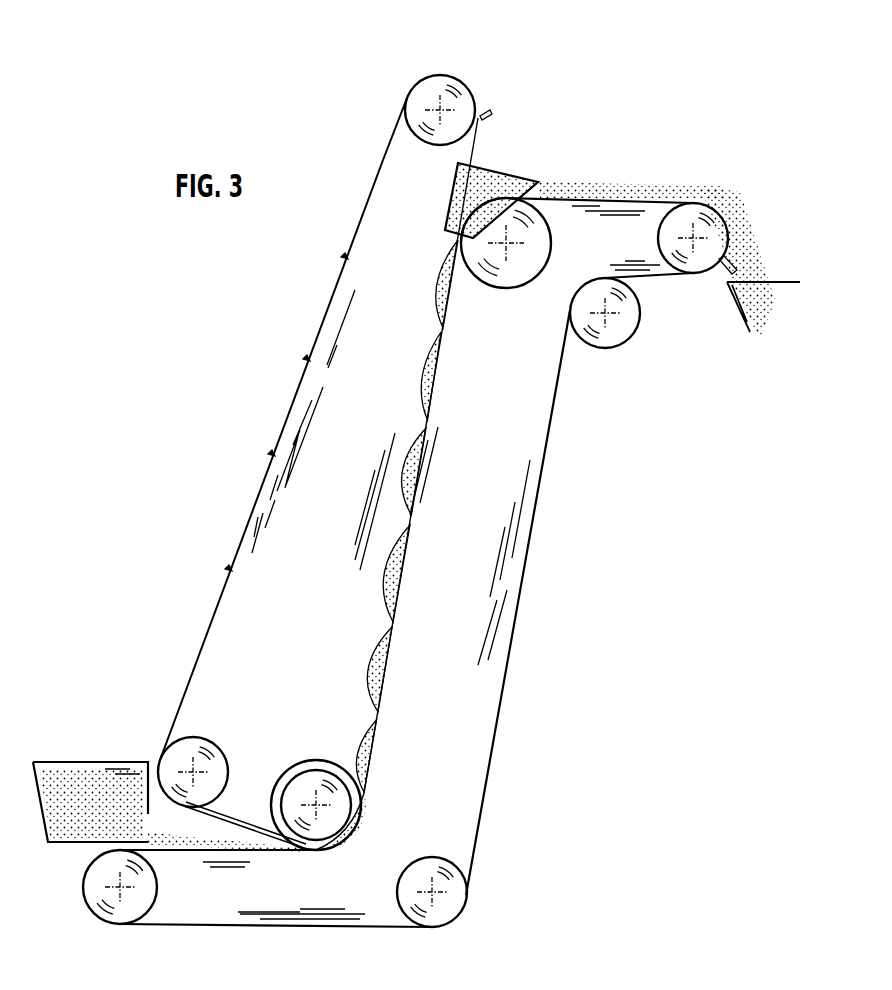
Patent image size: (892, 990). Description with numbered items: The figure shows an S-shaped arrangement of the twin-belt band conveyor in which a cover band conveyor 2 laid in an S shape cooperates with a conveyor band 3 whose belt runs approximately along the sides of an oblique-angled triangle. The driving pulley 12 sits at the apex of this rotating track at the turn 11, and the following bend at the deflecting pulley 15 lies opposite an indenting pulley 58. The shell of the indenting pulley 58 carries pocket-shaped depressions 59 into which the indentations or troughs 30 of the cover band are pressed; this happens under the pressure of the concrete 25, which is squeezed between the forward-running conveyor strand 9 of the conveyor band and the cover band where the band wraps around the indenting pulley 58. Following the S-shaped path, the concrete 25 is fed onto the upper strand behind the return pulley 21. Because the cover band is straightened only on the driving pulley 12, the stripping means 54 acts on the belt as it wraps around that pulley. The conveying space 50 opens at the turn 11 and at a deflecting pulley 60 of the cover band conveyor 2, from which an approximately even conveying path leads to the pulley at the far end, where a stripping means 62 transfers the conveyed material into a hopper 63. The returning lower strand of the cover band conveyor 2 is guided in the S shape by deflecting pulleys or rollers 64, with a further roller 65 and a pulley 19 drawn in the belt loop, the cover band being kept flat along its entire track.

The cover band conveyor 2 is at (533, 570).
The conveyor band 3 is at (262, 487).
The conveyor strand 9 is at (392, 648).
The turn 11 is at (443, 76).
The driving pulley 12 is at (466, 92).
The deflecting pulley 15 is at (180, 763).
The end roller 19 is at (700, 262).
The return pulley 21 is at (112, 903).
The concrete 25 is at (315, 852).
The troughs 30 is at (340, 833).
The conveying space 50 is at (447, 313).
The stripping means 54 is at (487, 118).
The indenting pulley 58 is at (304, 763).
The pocket-shaped depressions 59 is at (360, 812).
The deflecting pulley 60 is at (543, 237).
The stripping means 62 is at (738, 258).
The hopper 63 is at (768, 318).
The deflecting pulleys 64 is at (596, 336).
The lower guide roller 65 is at (452, 906).